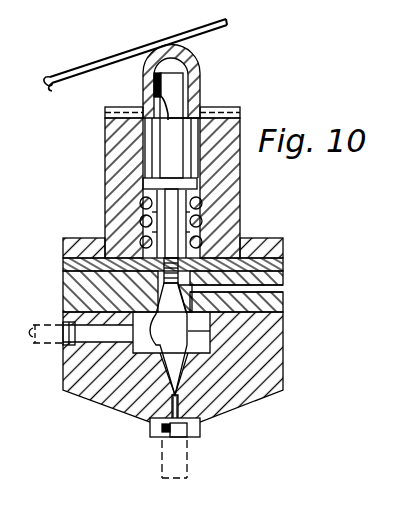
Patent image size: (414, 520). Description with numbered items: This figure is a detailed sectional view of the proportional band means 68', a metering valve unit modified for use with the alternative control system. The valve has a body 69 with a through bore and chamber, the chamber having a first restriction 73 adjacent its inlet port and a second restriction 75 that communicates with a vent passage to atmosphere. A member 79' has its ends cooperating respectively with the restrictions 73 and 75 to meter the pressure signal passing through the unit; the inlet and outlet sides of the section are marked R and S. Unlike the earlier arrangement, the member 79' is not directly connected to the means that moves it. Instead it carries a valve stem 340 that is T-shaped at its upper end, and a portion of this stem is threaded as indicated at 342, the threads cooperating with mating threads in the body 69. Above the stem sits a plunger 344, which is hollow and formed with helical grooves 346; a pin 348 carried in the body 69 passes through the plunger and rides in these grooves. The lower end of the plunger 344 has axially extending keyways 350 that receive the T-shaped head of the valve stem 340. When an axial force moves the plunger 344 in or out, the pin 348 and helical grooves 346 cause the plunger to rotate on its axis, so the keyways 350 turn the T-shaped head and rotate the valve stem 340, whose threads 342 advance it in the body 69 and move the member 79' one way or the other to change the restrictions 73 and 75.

The plunger 344 is at (209, 82).
The helical grooves 346 is at (212, 96).
The pin 348 is at (225, 104).
The axially extending keyways 350 is at (152, 174).
The proportional band means 68' is at (205, 188).
The valve stem 340 is at (180, 226).
The threads 342 is at (283, 264).
The member 79' is at (204, 296).
The second restriction 75 is at (283, 299).
The first restriction 73 is at (283, 346).
The body 69 is at (60, 283).
The inlet R is at (62, 352).
The outlet S is at (203, 432).